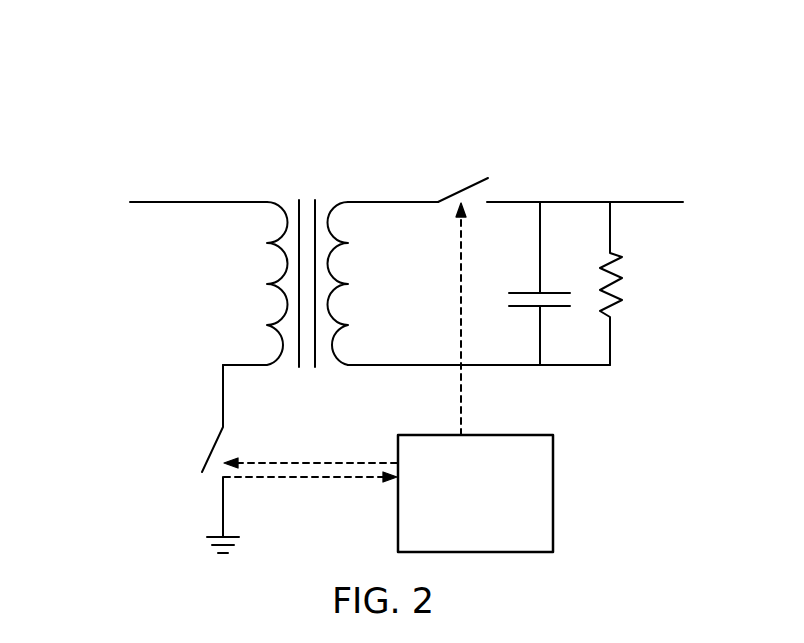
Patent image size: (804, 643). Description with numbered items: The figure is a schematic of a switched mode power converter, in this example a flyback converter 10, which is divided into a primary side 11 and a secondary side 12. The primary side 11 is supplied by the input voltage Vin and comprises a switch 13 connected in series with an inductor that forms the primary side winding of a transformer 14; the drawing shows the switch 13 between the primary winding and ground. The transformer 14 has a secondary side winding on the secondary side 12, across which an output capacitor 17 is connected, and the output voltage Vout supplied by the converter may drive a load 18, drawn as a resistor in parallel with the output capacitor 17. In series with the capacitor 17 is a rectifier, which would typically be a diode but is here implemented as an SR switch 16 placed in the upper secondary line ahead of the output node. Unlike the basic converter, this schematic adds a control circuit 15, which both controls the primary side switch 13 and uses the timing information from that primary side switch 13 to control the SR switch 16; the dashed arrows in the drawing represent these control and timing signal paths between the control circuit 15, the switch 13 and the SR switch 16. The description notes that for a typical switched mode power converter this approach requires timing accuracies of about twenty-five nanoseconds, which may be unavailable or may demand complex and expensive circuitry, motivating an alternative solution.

The flyback converter 10 is at (217, 86).
The primary side 11 is at (96, 148).
The secondary side 12 is at (411, 158).
The switch 13 is at (225, 452).
The transformer 14 is at (316, 208).
The control circuit 15 is at (492, 505).
The SR switch 16 is at (473, 185).
The output capacitor 17 is at (552, 290).
The load 18 is at (622, 264).